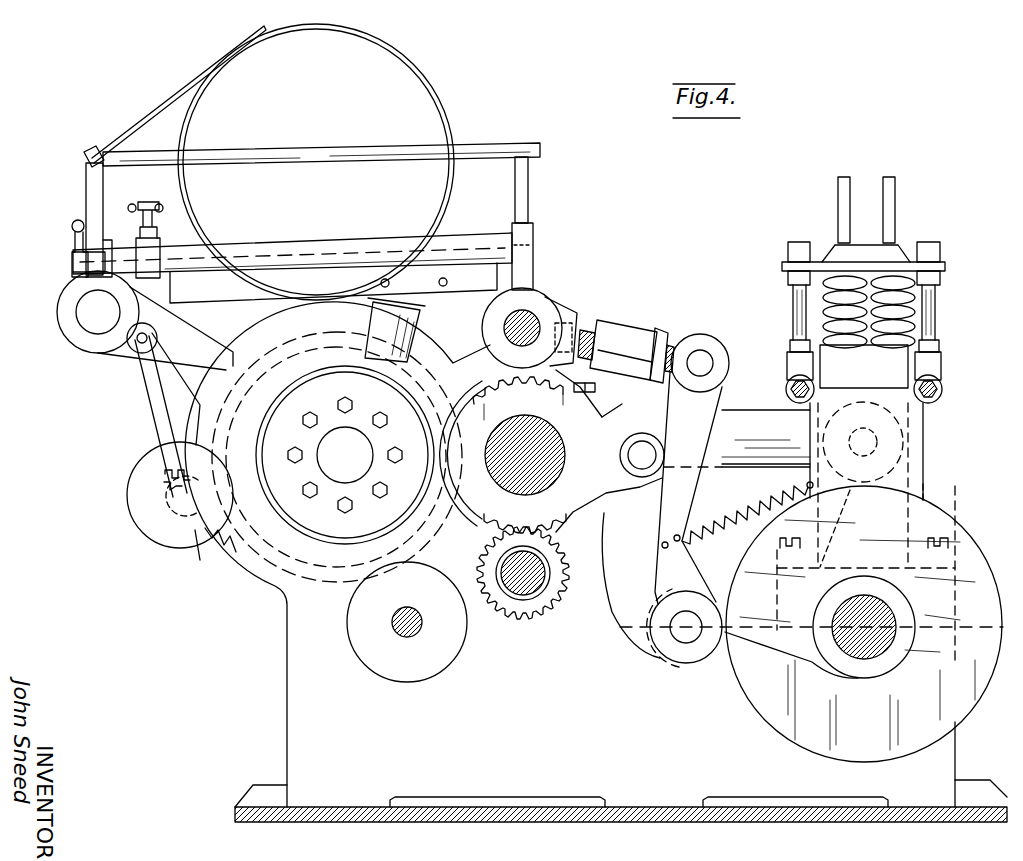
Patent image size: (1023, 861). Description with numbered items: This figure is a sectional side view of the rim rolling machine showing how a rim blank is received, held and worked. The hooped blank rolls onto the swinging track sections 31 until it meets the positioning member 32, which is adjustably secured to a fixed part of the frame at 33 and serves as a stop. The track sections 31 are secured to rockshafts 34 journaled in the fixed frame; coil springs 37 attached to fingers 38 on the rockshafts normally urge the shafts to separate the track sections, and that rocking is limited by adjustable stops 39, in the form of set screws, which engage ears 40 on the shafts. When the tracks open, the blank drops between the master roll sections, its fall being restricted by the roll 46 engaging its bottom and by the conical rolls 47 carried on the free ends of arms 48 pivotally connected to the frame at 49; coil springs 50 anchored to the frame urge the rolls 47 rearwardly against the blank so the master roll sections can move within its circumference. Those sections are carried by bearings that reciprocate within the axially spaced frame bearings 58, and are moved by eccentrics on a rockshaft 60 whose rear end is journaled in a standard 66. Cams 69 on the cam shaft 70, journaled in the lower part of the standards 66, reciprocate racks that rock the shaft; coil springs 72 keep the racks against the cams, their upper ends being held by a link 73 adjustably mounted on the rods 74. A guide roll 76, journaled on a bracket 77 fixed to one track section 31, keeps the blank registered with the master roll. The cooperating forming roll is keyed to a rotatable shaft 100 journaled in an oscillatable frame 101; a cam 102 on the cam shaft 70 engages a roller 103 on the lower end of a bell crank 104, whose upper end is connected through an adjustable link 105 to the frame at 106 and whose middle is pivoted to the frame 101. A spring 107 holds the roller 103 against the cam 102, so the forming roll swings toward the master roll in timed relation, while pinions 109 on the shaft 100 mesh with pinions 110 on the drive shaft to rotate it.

The track sections 31 is at (218, 292).
The positioning member 32 is at (176, 94).
The adjustable securing point 33 is at (92, 148).
The rockshafts 34 is at (148, 250).
The coil springs 37 is at (128, 207).
The fingers 38 is at (140, 223).
The adjustable stops 39 is at (70, 258).
The ears 40 is at (57, 306).
The roll 46 is at (390, 672).
The conical rolls 47 is at (165, 537).
The arms 48 is at (160, 425).
The pivotal connection 49 is at (135, 350).
The coil springs 50 is at (212, 558).
The bearings 58 is at (262, 560).
The rockshaft 60 is at (743, 420).
The standards 66 is at (920, 428).
The cams 69 is at (772, 688).
The cam shaft 70 is at (860, 653).
The coil springs 72 is at (905, 315).
The link 73 is at (873, 267).
The rods 74 is at (860, 178).
The guide roll 76 is at (440, 330).
The bracket 77 is at (418, 312).
The rotatable shaft 100 is at (562, 447).
The frame 101 is at (590, 400).
The cam 102 is at (898, 508).
The roller 103 is at (696, 598).
The bell crank 104 is at (695, 513).
The adjustable link 105 is at (630, 335).
The fixed frame connection 106 is at (537, 317).
The spring 107 is at (781, 500).
The pinions 109 is at (475, 520).
The pinions 110 is at (535, 617).